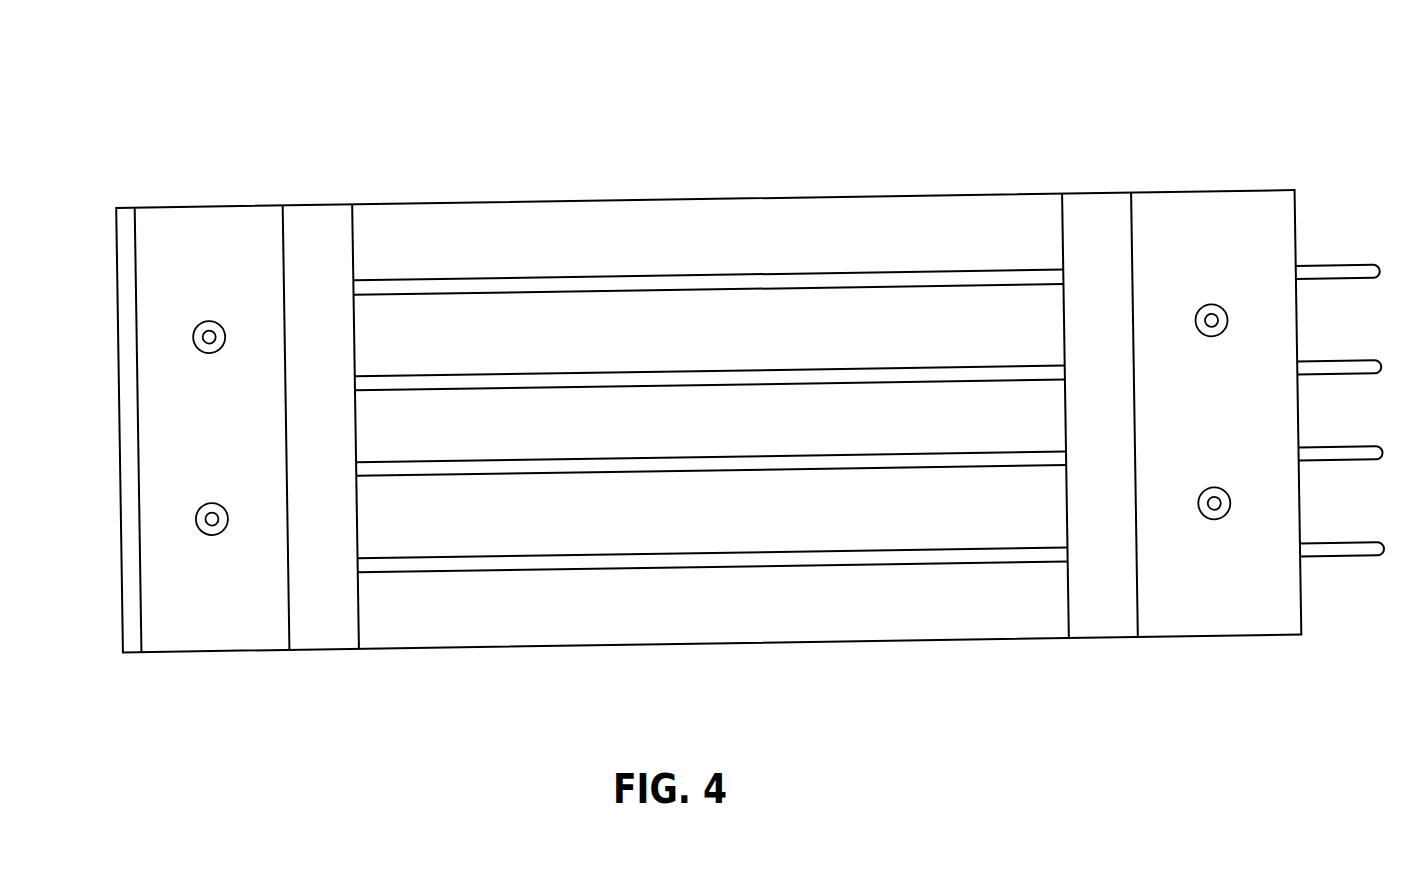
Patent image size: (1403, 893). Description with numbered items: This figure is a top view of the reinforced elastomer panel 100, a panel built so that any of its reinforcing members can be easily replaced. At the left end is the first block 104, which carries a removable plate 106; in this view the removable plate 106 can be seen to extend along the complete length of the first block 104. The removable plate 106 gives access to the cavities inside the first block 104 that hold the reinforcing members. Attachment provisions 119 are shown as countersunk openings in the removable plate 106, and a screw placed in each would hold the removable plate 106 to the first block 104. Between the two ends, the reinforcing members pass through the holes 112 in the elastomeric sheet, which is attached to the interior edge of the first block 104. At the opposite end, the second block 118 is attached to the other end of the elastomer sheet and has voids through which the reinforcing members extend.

The reinforced elastomer panel 100 is at (660, 70).
The first block 104 is at (316, 232).
The removable plate 106 is at (207, 232).
The holes in the elastomeric sheet 112 is at (618, 553).
The second block 118 is at (1154, 217).
The attachment provisions 119 is at (224, 344).